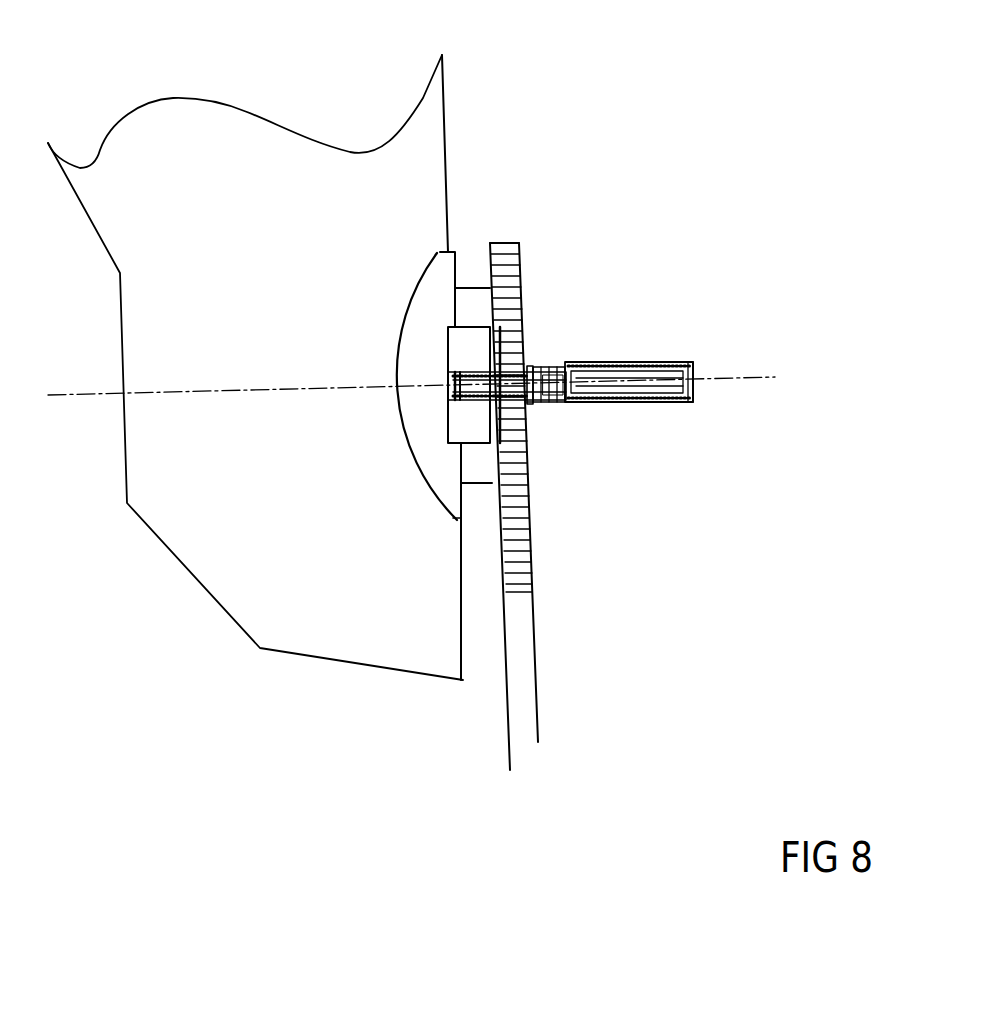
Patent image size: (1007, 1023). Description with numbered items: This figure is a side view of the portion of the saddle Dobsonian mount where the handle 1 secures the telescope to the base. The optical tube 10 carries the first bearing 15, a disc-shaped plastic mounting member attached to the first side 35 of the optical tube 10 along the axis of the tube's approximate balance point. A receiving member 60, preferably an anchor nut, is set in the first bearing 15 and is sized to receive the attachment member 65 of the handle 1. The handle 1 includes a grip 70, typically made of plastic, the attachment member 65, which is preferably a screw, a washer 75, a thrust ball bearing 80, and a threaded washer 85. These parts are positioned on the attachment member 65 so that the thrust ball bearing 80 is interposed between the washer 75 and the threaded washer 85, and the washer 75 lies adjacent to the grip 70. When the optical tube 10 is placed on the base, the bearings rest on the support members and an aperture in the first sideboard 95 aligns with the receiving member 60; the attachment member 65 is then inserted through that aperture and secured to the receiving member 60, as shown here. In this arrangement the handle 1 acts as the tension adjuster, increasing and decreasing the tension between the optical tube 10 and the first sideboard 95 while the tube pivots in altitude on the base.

The handle 1 is at (657, 345).
The optical tube 10 is at (305, 205).
The first bearing 15 is at (472, 282).
The first side 35 is at (443, 130).
The receiving member 60 is at (453, 397).
The attachment member 65 is at (457, 367).
The grip 70 is at (657, 402).
The washer 75 is at (540, 365).
The thrust ball bearing 80 is at (528, 405).
The threaded washer 85 is at (527, 367).
The first sideboard 95 is at (537, 635).